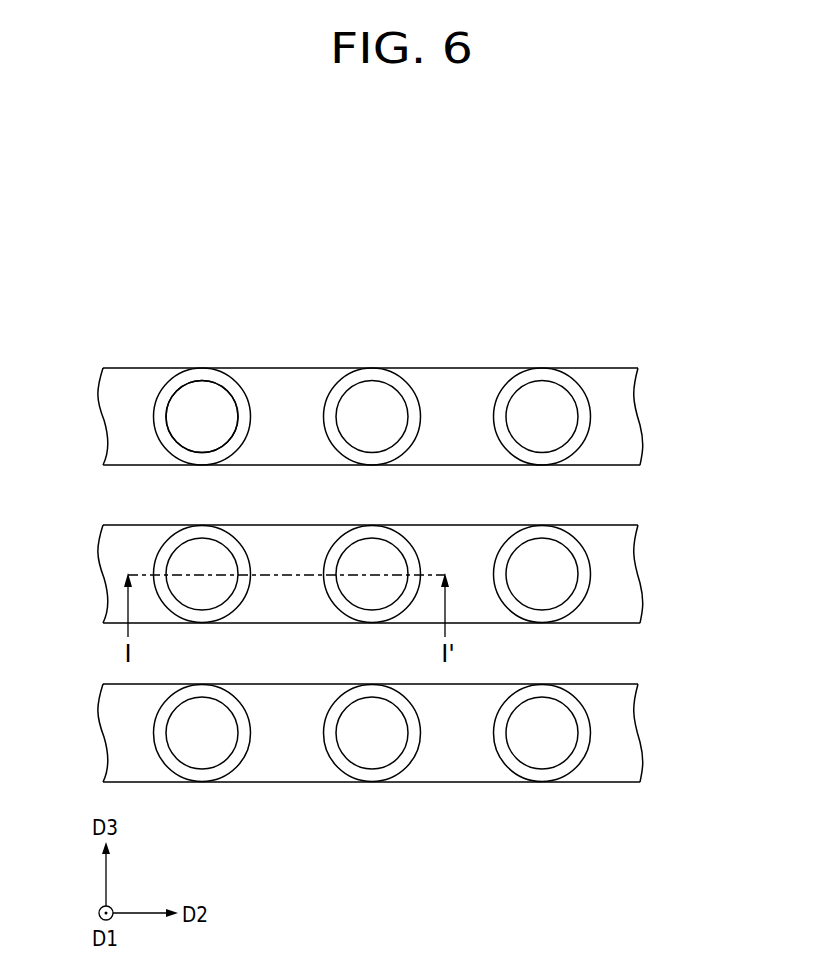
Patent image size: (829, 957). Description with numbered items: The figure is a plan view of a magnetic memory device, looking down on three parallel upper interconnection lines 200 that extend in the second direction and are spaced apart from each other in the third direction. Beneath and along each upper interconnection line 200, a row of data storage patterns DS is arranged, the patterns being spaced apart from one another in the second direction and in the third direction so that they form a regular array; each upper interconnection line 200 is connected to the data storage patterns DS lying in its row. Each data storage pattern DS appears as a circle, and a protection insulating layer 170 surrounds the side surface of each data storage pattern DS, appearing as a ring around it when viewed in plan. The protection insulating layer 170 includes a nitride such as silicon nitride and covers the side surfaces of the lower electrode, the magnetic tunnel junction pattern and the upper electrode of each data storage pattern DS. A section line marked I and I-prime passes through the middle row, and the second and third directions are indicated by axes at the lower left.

The protection insulating layer 170 is at (187, 377).
The data storage pattern DS is at (207, 390).
The upper interconnection line 200 is at (628, 416).